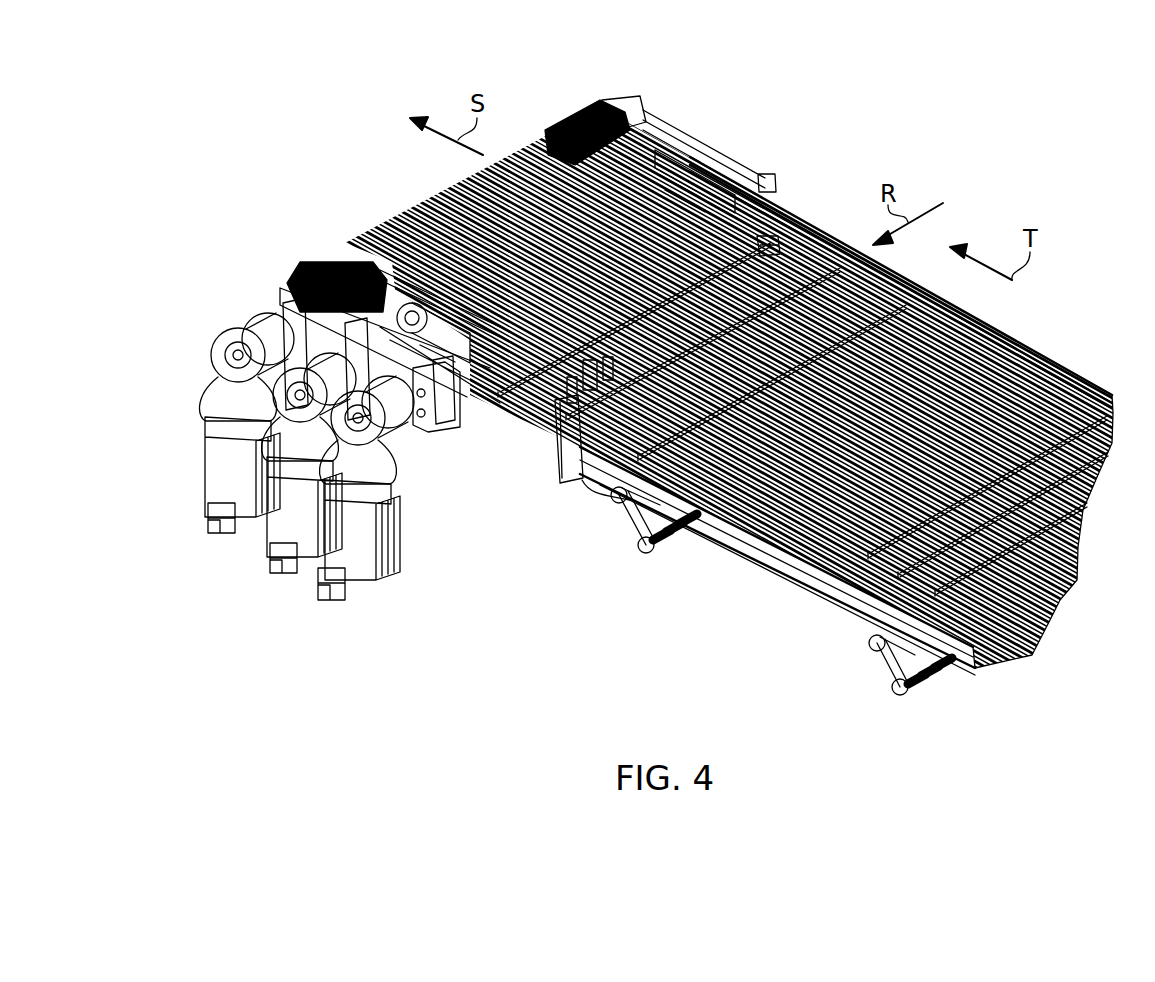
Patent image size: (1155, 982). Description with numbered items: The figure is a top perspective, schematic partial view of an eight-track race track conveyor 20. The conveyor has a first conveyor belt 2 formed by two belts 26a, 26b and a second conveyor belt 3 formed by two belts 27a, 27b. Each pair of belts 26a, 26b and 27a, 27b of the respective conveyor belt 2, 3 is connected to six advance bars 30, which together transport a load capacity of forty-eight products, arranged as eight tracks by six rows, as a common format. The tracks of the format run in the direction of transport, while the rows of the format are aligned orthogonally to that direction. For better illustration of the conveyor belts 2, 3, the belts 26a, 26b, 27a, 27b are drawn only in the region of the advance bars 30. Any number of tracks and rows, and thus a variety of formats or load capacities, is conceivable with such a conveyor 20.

The first conveyor belt 2 is at (520, 527).
The second conveyor belt 3 is at (888, 689).
The race track conveyor 20 is at (667, 382).
The belt 26a is at (612, 475).
The belt 26b is at (782, 254).
The belt 27a is at (845, 545).
The belt 27b is at (1082, 382).
The advance bar 30 is at (773, 237).